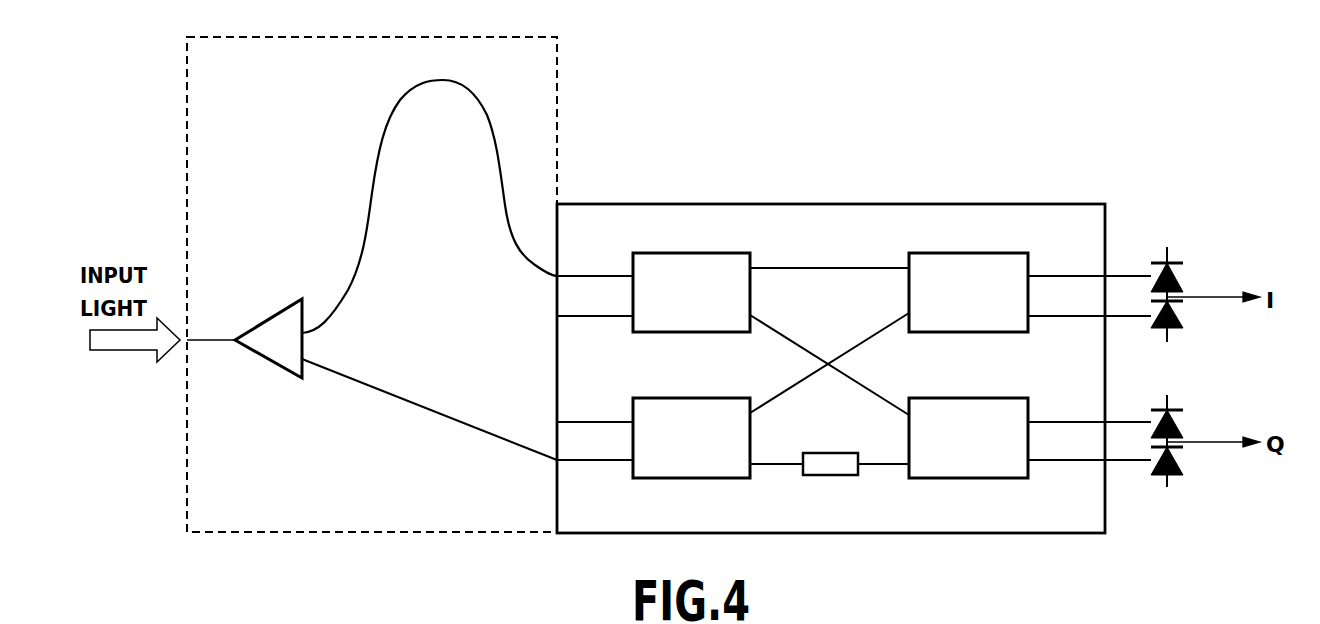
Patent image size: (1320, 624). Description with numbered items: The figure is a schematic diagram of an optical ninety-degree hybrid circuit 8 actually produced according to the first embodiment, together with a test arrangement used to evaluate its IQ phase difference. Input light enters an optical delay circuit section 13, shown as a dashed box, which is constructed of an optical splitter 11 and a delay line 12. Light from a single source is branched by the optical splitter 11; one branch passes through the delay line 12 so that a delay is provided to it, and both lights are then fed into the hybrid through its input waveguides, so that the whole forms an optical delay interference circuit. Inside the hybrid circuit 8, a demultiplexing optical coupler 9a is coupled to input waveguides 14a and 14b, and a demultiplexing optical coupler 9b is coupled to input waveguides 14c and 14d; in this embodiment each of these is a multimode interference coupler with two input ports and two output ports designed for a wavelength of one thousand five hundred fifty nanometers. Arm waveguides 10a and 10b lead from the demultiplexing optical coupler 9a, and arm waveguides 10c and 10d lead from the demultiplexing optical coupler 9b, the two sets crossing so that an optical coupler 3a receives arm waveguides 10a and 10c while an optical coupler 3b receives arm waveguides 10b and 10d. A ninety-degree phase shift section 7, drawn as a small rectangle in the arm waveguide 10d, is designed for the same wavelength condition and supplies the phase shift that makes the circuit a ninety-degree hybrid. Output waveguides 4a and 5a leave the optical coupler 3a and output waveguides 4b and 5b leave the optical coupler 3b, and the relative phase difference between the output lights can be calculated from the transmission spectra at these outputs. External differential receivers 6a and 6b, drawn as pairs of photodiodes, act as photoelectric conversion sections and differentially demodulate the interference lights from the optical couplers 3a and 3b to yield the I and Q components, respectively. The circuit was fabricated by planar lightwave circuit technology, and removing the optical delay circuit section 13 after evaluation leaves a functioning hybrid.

The optical coupler 3a is at (970, 253).
The optical coupler 3b is at (970, 398).
The output waveguide 4a is at (1050, 276).
The output waveguide 4b is at (1050, 422).
The output waveguide 5a is at (1050, 316).
The output waveguide 5b is at (1050, 460).
The differential receiver 6a is at (1167, 281).
The differential receiver 6b is at (1167, 427).
The 90-degree phase shift section 7 is at (845, 475).
The optical 90-degree hybrid circuit 8 is at (822, 204).
The demultiplexing optical coupler 9a is at (692, 253).
The demultiplexing optical coupler 9b is at (692, 398).
The arm waveguide 10a is at (812, 268).
The arm waveguide 10b is at (792, 341).
The arm waveguide 10c is at (790, 395).
The arm waveguide 10d is at (773, 464).
The optical splitter 11 is at (265, 317).
The delay line 12 is at (485, 107).
The optical delay circuit section 13 is at (557, 65).
The input waveguide 14a is at (577, 276).
The input waveguide 14b is at (577, 316).
The input waveguide 14c is at (577, 422).
The input waveguide 14d is at (577, 460).